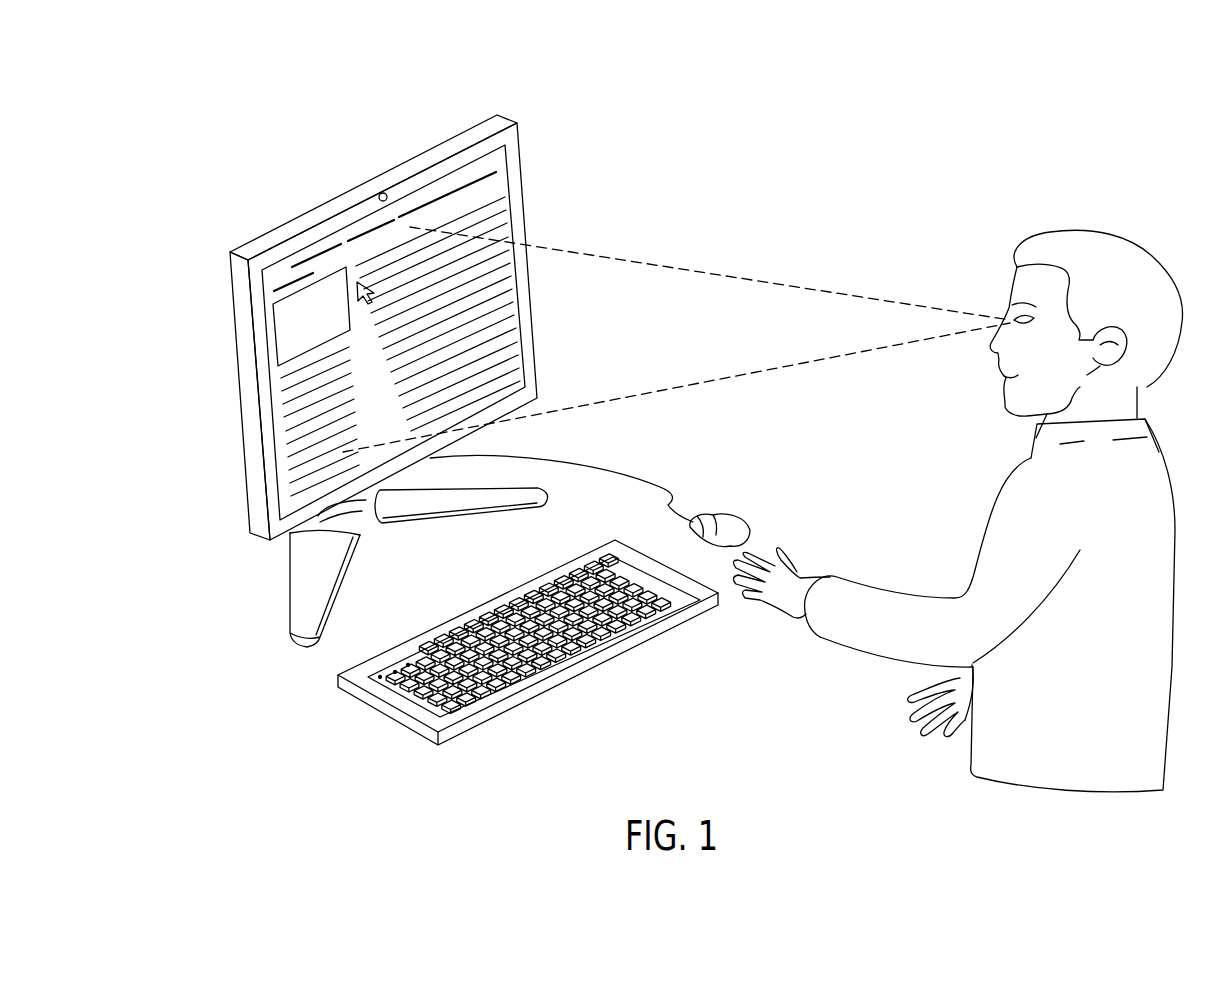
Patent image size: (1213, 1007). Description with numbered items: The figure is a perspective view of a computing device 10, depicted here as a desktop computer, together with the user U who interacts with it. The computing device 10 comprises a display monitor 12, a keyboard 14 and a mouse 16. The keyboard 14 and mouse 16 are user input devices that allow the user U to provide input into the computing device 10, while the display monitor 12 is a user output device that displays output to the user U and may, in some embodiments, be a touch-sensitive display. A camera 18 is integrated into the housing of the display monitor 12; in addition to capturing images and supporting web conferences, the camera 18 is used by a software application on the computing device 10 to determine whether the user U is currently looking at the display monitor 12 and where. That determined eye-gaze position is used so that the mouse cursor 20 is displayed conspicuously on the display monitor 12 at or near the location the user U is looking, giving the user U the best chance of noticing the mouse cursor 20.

The computing device 10 is at (223, 160).
The display monitor 12 is at (490, 160).
The keyboard 14 is at (468, 615).
The mouse 16 is at (730, 513).
The camera 18 is at (386, 193).
The mouse cursor 20 is at (364, 313).
The user U is at (1130, 223).